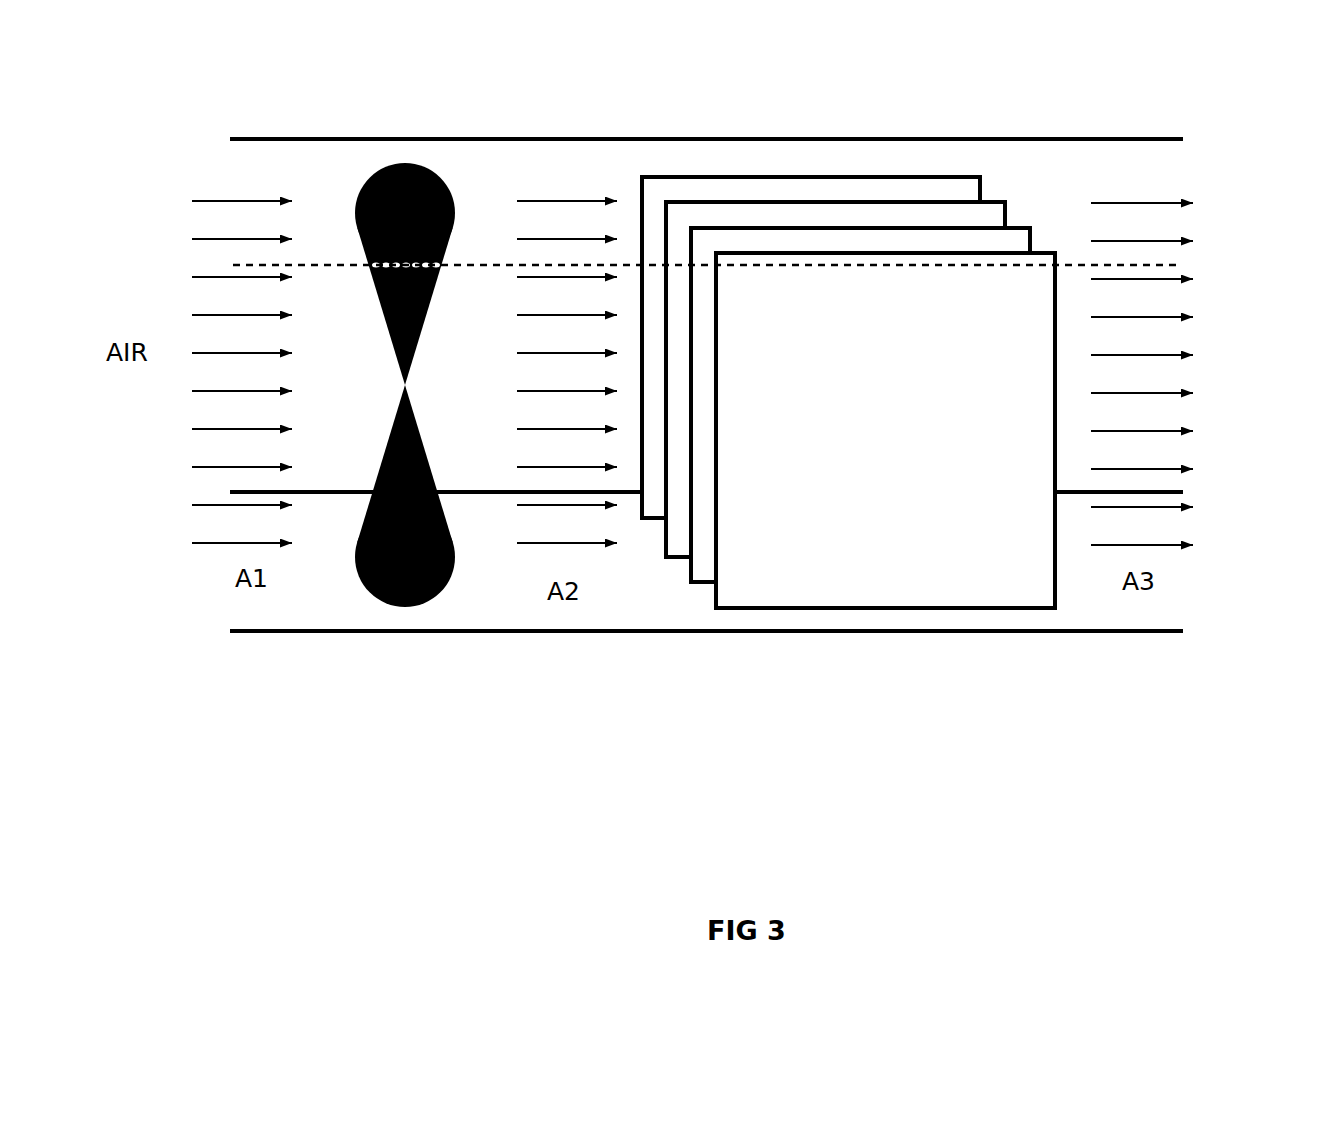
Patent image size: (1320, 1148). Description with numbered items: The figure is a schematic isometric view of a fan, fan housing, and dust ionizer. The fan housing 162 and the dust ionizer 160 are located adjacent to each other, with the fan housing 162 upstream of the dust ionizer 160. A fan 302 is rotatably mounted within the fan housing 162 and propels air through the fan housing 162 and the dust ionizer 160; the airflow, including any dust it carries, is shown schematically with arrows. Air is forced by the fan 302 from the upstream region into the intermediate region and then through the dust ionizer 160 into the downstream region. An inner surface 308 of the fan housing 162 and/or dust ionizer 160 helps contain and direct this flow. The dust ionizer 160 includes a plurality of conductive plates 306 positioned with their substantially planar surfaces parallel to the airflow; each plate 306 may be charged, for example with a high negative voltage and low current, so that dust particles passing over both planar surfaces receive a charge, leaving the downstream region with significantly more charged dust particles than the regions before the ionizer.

The dust ionizer 160 is at (605, 88).
The fan housing 162 is at (580, 88).
The fan 302 is at (404, 618).
The conductive plate 306 is at (655, 505).
The inner surface 308 is at (1157, 620).